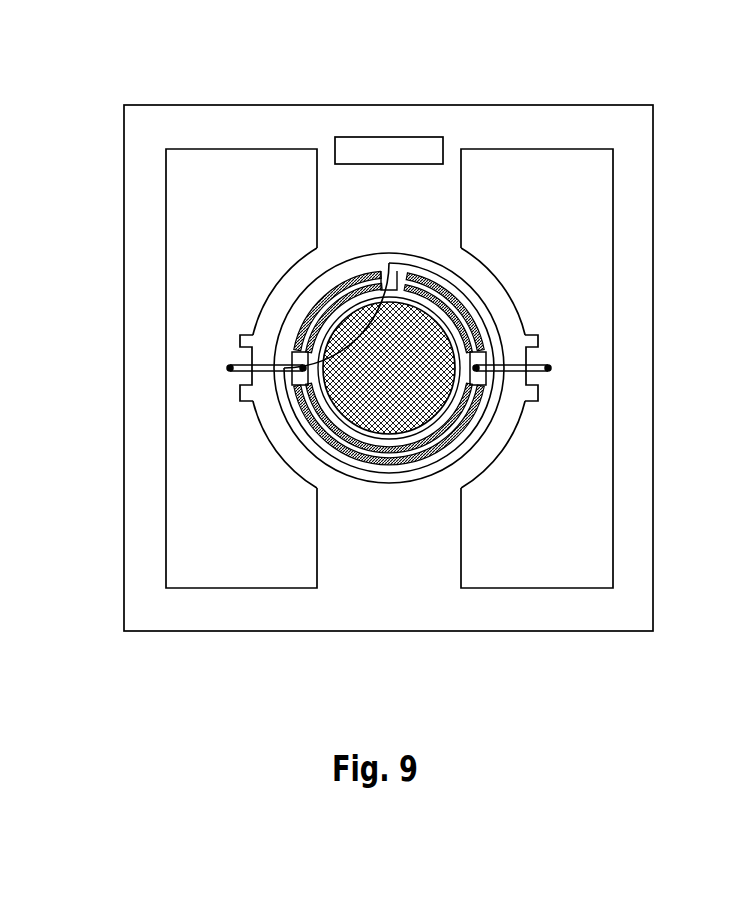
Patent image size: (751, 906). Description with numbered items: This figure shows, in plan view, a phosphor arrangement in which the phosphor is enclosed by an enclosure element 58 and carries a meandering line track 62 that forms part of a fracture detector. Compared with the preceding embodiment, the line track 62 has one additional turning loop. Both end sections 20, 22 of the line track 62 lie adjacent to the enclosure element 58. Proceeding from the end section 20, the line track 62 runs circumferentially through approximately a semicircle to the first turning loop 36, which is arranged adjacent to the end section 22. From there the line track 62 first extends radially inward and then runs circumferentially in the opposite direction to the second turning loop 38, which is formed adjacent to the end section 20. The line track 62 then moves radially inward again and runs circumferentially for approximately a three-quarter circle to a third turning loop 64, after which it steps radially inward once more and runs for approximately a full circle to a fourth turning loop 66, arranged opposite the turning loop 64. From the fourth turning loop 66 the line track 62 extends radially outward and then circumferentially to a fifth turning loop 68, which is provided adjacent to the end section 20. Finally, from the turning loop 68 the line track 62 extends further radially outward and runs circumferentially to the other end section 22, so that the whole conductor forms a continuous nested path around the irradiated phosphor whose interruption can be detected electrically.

The end section 20 is at (288, 352).
The end section 22 is at (551, 369).
The first turning loop 36 is at (487, 428).
The second turning loop 38 is at (298, 425).
The enclosure element 58 is at (496, 336).
The line track 62 is at (400, 474).
The third turning loop 64 is at (399, 284).
The fourth turning loop 66 is at (386, 283).
The fifth turning loop 68 is at (299, 338).